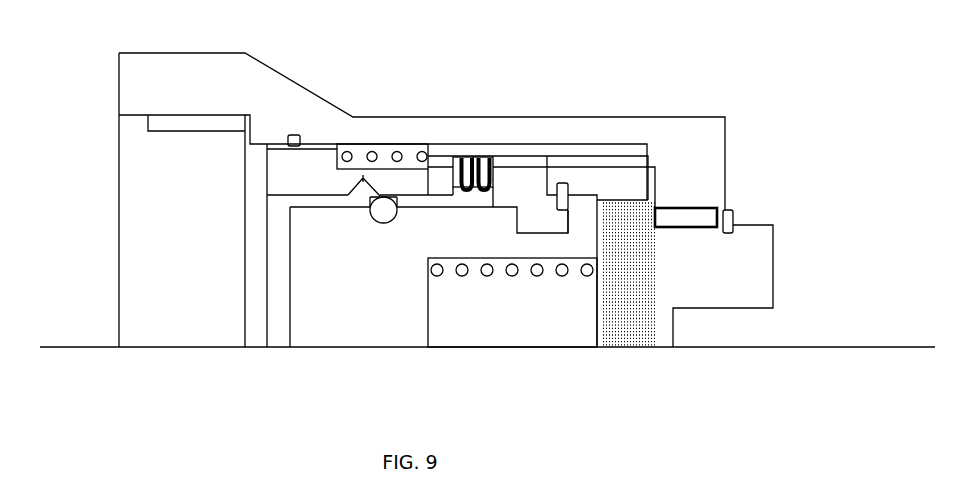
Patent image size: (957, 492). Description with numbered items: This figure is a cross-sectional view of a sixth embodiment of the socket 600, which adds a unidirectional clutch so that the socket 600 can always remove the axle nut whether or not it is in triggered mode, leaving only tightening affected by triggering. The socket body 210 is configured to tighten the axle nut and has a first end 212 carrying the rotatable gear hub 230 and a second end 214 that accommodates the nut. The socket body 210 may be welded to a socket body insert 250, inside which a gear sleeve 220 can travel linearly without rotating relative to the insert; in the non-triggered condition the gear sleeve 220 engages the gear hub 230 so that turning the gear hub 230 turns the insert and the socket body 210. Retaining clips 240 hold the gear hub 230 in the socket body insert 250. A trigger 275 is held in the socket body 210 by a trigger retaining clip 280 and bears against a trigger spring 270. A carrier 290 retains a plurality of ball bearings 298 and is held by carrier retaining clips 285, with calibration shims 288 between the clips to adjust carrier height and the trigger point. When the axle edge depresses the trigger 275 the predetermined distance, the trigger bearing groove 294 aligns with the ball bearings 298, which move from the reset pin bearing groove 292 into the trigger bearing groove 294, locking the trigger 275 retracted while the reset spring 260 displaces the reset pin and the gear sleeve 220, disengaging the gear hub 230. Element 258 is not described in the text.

The socket 600 is at (631, 24).
The socket body 210 is at (472, 99).
The first end 212 is at (716, 352).
The second end 214 is at (167, 358).
The gear sleeve 220 is at (607, 170).
The gear hub 230 is at (770, 225).
The retaining clips 240 is at (728, 203).
The socket body insert 250 is at (696, 150).
The pump 258 is at (699, 229).
The reset spring 260 is at (535, 300).
The trigger spring 270 is at (382, 141).
The trigger 275 is at (311, 164).
The trigger retaining clip 280 is at (291, 134).
The carrier retaining clips 285 is at (462, 148).
The calibration shims 288 is at (484, 190).
The carrier 290 is at (489, 190).
The reset pin bearing groove 292 is at (394, 225).
The trigger bearing groove 294 is at (378, 176).
The ball bearings 298 is at (381, 219).